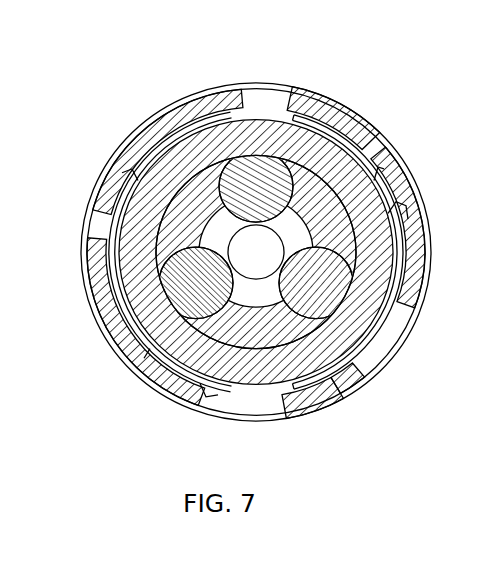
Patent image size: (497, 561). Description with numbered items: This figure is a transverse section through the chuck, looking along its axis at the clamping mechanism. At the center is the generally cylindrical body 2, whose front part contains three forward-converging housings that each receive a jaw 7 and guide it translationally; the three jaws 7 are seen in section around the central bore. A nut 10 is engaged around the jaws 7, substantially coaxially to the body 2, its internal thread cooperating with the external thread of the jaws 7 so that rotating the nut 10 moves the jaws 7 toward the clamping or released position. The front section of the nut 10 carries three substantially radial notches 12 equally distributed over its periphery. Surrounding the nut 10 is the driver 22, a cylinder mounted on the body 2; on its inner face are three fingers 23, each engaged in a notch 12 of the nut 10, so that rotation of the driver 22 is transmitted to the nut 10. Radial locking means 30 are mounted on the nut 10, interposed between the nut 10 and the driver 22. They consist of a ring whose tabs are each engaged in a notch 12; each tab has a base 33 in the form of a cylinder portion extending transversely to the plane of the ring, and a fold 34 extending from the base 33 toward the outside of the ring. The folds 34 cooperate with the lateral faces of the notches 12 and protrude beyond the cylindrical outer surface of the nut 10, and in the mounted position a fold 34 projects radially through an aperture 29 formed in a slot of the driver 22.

The body 2 is at (132, 135).
The jaw 7 is at (245, 172).
The nut 10 is at (297, 137).
The notch 12 is at (243, 390).
The driver 22 is at (305, 105).
The finger 23 is at (378, 162).
The aperture 29 is at (157, 357).
The radial locking means 30 is at (383, 213).
The base 33 is at (118, 195).
The fold 34 is at (197, 385).